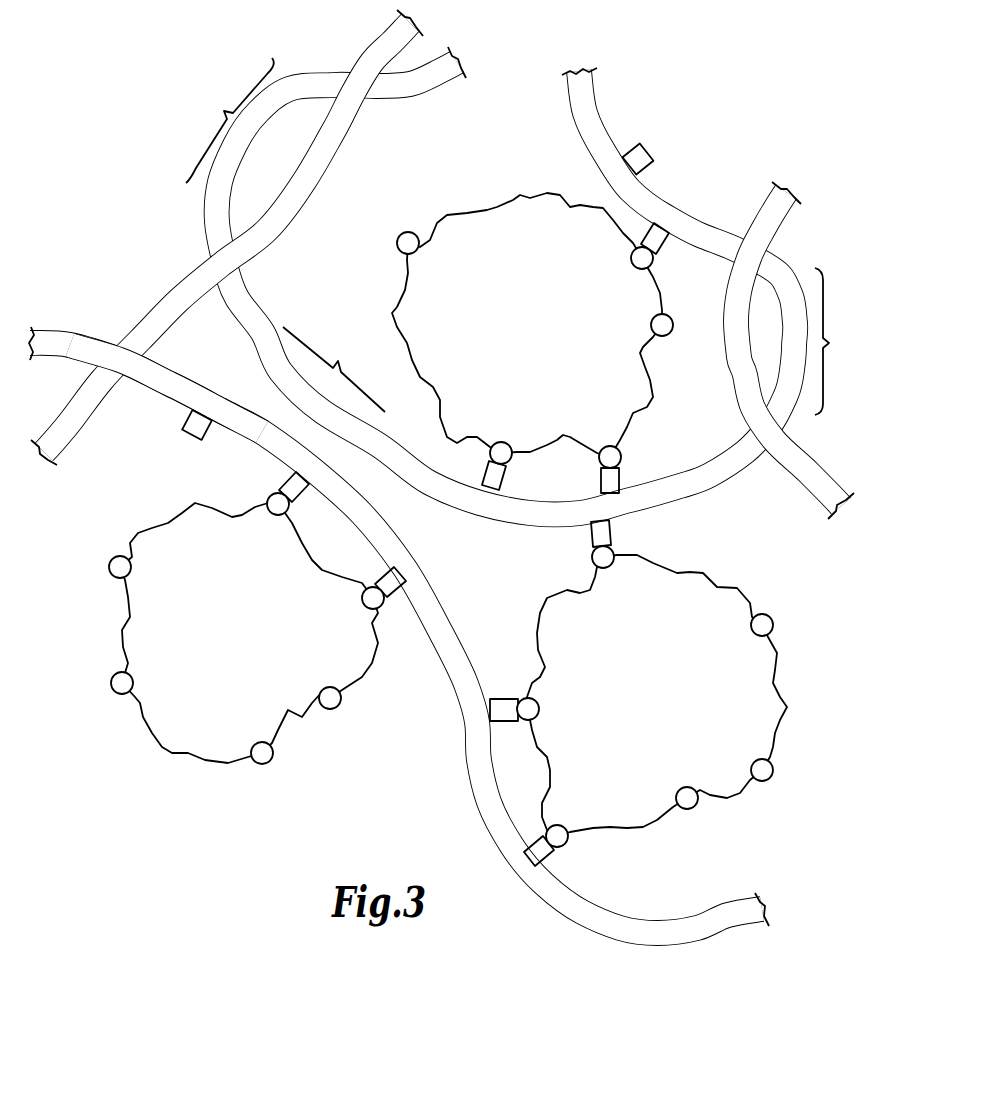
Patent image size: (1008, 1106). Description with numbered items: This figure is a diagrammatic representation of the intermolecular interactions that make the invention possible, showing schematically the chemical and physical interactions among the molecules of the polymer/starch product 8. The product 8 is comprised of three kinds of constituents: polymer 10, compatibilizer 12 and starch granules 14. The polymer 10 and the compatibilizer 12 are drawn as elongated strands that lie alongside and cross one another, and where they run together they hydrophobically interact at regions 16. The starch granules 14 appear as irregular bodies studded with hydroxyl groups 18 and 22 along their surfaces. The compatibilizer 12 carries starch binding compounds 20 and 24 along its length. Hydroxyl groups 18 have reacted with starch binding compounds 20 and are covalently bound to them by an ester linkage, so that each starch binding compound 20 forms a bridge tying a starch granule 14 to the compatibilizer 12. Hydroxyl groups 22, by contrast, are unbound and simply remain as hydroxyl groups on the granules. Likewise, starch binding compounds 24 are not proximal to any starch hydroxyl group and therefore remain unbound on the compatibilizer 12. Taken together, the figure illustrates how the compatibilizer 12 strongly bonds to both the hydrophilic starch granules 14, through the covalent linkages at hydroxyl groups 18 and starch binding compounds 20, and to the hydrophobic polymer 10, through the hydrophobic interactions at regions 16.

The polymer/starch product 8 is at (762, 42).
The polymer 10 is at (137, 316).
The compatibilizer 12 is at (602, 124).
The starch granules 14 is at (497, 210).
The regions 16 is at (522, 236).
The hydroxyl groups 18 is at (270, 496).
The starch binding compounds 20 is at (305, 494).
The hydroxyl groups 22 is at (400, 236).
The starch binding compounds 24 is at (649, 157).